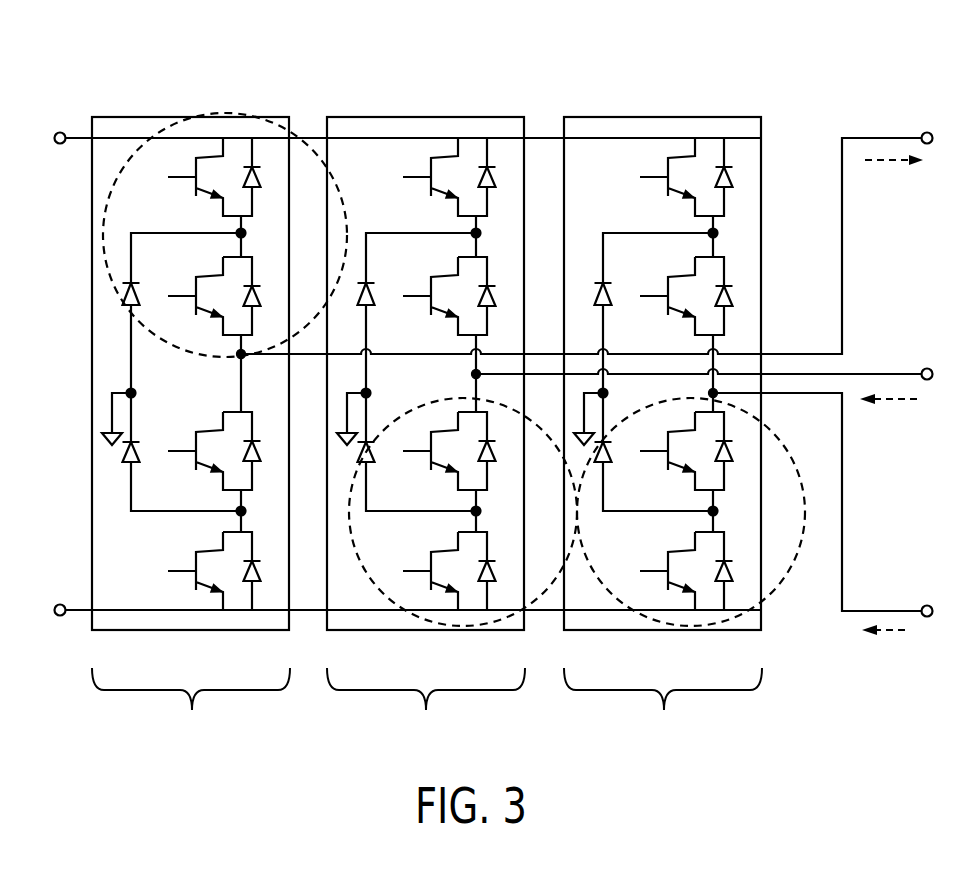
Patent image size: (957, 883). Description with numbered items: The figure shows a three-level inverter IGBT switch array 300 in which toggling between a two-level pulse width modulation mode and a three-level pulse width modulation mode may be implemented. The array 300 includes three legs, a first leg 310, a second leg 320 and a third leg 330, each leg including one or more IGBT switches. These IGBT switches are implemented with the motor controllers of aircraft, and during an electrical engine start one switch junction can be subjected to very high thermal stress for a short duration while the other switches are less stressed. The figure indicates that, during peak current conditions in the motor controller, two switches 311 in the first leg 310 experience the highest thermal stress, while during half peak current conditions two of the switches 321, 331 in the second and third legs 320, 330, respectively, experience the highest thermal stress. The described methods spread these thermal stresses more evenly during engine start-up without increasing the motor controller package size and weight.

The three-level inverter IGBT switch array 300 is at (74, 50).
The first leg 310 is at (191, 430).
The switches 311 is at (101, 262).
The second leg 320 is at (426, 430).
The switches 321 is at (355, 553).
The third leg 330 is at (663, 430).
The switches 331 is at (773, 592).